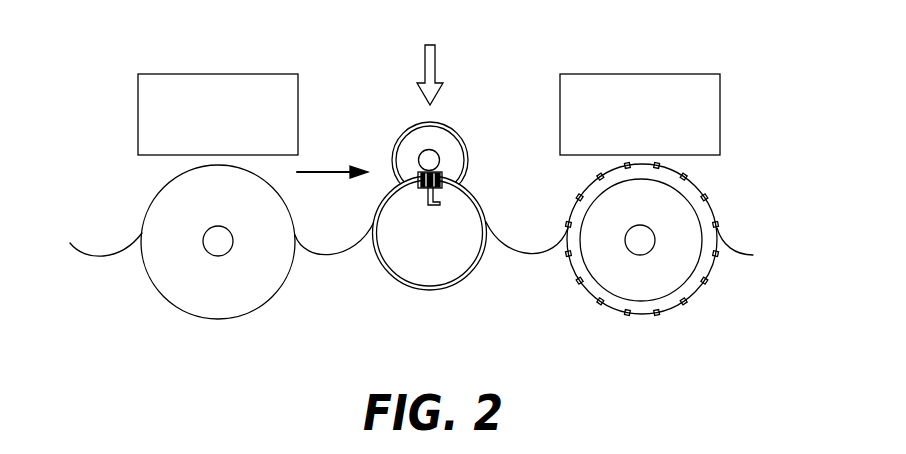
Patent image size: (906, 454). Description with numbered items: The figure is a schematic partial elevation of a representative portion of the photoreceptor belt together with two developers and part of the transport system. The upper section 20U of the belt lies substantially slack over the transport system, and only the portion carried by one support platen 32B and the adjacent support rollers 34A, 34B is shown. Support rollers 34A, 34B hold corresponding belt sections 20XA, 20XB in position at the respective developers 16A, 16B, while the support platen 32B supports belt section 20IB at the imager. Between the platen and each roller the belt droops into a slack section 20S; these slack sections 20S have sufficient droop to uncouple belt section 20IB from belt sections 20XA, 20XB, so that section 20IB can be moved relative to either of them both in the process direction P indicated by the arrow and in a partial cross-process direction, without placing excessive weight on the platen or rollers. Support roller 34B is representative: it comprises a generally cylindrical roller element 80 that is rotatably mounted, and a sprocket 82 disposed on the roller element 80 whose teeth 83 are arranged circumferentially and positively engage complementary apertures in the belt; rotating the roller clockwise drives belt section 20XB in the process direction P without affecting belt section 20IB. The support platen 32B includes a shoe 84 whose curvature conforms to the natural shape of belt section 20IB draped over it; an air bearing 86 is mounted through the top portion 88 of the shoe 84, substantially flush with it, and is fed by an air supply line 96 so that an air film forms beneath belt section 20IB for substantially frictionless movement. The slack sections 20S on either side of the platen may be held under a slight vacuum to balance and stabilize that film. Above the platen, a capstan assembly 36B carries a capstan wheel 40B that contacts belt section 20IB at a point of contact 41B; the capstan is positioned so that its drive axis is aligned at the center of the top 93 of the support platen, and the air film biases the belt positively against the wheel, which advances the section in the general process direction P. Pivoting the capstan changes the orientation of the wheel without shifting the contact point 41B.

The developer 16A is at (232, 75).
The developer 16B is at (645, 74).
The belt section 20XA is at (152, 205).
The belt section 20XB is at (712, 202).
The slack section 20S is at (333, 256).
The belt section 20IB is at (466, 187).
The upper section of the photoreceptor belt 20U is at (733, 245).
The support roller 34A is at (165, 283).
The support roller 34B is at (683, 292).
The support platen 32B is at (390, 277).
The capstan assembly 36B is at (453, 132).
The capstan wheel 40B is at (441, 157).
The point of contact 41B is at (421, 173).
The top of support platen 93 is at (435, 65).
The air bearing 86 is at (418, 190).
The top portion of the shoe 88 is at (465, 197).
The air supply line 96 is at (432, 205).
The shoe 84 is at (462, 284).
The sprocket 82 is at (595, 307).
The roller element 80 is at (640, 317).
The sprocket teeth 83 is at (722, 255).
The process direction P is at (325, 168).